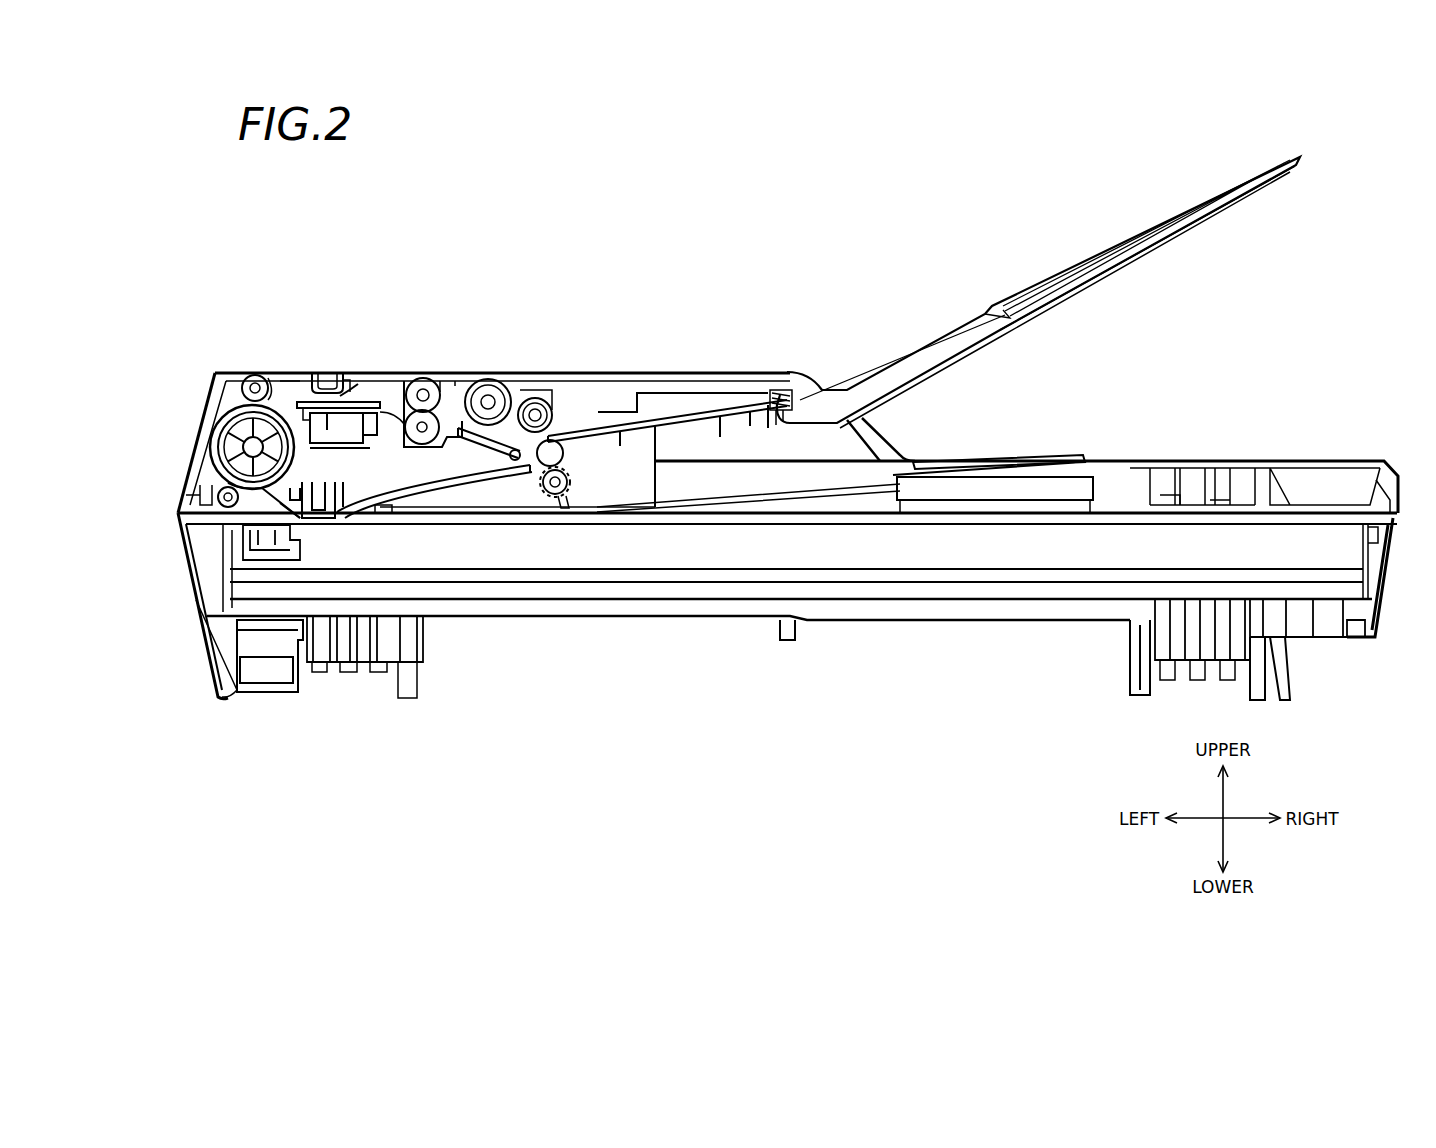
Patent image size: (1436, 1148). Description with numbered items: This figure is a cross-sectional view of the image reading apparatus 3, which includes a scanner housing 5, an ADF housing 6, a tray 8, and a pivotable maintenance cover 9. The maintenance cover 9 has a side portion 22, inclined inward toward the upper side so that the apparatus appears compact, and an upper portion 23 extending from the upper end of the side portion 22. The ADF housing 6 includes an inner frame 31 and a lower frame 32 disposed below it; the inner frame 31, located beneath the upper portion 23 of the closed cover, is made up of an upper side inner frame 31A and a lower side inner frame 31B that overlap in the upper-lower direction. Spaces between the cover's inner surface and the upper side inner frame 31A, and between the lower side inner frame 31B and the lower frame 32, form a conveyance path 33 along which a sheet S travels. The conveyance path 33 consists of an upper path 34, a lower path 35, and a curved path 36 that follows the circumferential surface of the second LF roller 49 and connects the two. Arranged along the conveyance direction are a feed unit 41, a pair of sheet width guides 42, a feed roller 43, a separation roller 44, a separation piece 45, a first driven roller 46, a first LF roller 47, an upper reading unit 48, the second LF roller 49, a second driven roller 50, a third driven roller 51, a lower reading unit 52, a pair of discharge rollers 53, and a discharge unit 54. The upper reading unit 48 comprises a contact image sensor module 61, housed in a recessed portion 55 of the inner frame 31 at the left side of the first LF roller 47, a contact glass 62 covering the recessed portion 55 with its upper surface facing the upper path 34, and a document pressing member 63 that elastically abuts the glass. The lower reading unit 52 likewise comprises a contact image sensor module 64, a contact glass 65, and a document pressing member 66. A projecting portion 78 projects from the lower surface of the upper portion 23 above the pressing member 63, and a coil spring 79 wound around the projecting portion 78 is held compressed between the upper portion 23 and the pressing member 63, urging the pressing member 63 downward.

The image reading apparatus 3 is at (812, 801).
The scanner housing 5 is at (1395, 618).
The ADF housing 6 is at (1399, 462).
The tray 8 is at (1230, 208).
The sheet S is at (1190, 207).
The maintenance cover 9 is at (288, 357).
The side portion 22 is at (200, 378).
The upper portion 23 is at (425, 378).
The inner frame 31 is at (574, 378).
The upper side inner frame 31A is at (395, 378).
The lower side inner frame 31B is at (425, 515).
The lower frame 32 is at (462, 497).
The conveyance path 33 is at (197, 458).
The upper path 34 is at (462, 378).
The lower path 35 is at (395, 512).
The curved path 36 is at (212, 372).
The feed unit 41 is at (716, 405).
The pair of sheet width guides 42 is at (669, 400).
The feed roller 43 is at (549, 378).
The separation roller 44 is at (502, 378).
The separation piece 45 is at (514, 449).
The first driven roller 46 is at (449, 378).
The first LF roller 47 is at (427, 378).
The upper reading unit 48 is at (435, 446).
The second LF roller 49 is at (254, 373).
The second driven roller 50 is at (262, 373).
The third driven roller 51 is at (215, 640).
The lower reading unit 52 is at (538, 584).
The pair of discharge rollers 53 is at (567, 500).
The discharge unit 54 is at (965, 455).
The recessed portion 55 is at (368, 378).
The contact image sensor module 61 is at (336, 435).
The contact glass 62 is at (352, 378).
The document pressing member 63 is at (305, 401).
The contact image sensor module 64 is at (262, 565).
The contact glass 65 is at (762, 525).
The document pressing member 66 is at (397, 466).
The projecting portion 78 is at (331, 374).
The coil spring 79 is at (343, 374).